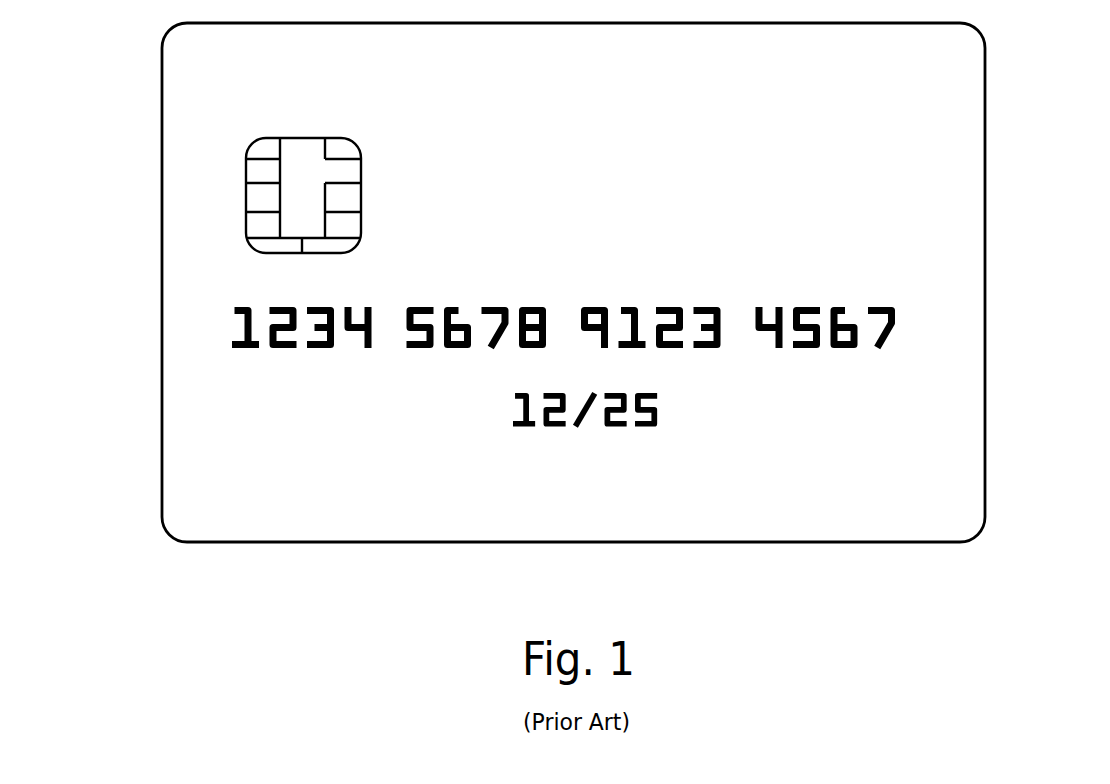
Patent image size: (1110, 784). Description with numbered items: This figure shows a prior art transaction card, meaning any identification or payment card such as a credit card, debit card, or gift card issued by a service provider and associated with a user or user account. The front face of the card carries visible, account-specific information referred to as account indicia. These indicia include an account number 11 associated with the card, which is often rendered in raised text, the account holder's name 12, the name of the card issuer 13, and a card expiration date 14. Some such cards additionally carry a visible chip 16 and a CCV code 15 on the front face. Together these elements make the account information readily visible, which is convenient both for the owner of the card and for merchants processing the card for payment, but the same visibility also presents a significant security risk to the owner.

The account number 11 is at (234, 322).
The account holder's name 12 is at (233, 476).
The name of the card issuer 13 is at (862, 98).
The card expiration date 14 is at (657, 417).
The CCV code 15 is at (907, 260).
The chip 16 is at (245, 200).